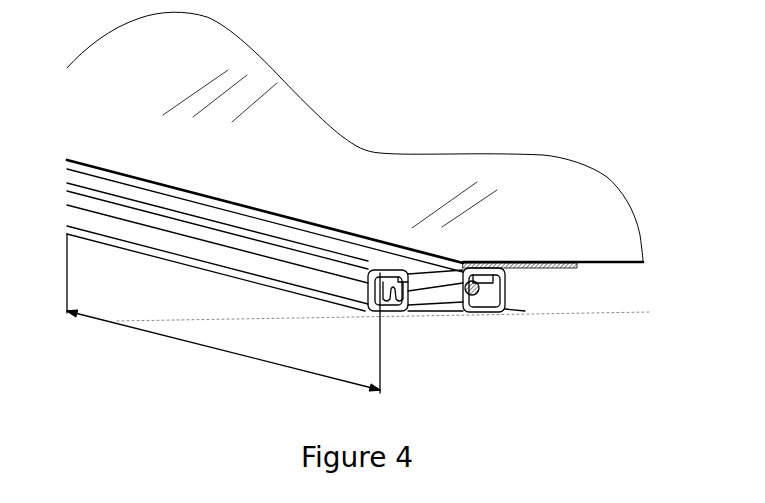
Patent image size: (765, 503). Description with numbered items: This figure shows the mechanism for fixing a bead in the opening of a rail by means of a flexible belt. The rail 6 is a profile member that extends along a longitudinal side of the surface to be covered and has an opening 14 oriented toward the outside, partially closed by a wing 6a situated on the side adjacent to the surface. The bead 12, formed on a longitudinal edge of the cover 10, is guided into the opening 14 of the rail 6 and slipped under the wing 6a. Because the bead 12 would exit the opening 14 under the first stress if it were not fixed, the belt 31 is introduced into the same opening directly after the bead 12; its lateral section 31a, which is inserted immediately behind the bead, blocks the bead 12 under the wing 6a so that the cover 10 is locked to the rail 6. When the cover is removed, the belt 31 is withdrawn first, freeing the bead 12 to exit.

The cover 10 is at (343, 158).
The opening 14 is at (371, 253).
The rail 6 is at (357, 308).
The belt 31 is at (433, 300).
The lateral section of the belt 31a is at (223, 313).
The wing 6a is at (497, 272).
The bead 12 is at (472, 295).